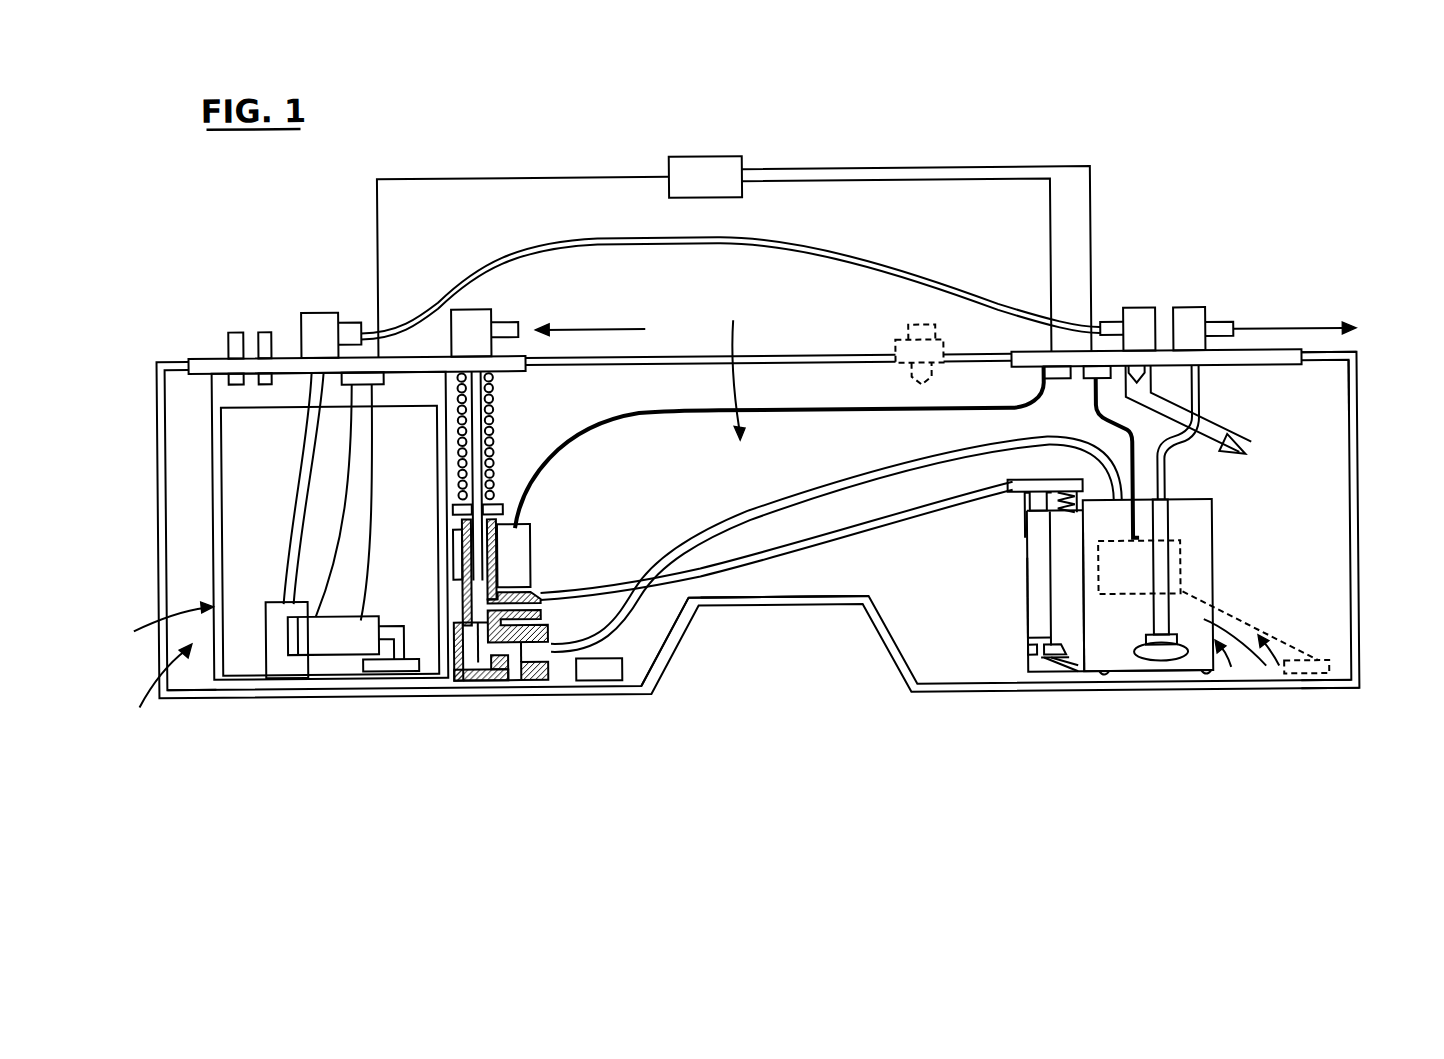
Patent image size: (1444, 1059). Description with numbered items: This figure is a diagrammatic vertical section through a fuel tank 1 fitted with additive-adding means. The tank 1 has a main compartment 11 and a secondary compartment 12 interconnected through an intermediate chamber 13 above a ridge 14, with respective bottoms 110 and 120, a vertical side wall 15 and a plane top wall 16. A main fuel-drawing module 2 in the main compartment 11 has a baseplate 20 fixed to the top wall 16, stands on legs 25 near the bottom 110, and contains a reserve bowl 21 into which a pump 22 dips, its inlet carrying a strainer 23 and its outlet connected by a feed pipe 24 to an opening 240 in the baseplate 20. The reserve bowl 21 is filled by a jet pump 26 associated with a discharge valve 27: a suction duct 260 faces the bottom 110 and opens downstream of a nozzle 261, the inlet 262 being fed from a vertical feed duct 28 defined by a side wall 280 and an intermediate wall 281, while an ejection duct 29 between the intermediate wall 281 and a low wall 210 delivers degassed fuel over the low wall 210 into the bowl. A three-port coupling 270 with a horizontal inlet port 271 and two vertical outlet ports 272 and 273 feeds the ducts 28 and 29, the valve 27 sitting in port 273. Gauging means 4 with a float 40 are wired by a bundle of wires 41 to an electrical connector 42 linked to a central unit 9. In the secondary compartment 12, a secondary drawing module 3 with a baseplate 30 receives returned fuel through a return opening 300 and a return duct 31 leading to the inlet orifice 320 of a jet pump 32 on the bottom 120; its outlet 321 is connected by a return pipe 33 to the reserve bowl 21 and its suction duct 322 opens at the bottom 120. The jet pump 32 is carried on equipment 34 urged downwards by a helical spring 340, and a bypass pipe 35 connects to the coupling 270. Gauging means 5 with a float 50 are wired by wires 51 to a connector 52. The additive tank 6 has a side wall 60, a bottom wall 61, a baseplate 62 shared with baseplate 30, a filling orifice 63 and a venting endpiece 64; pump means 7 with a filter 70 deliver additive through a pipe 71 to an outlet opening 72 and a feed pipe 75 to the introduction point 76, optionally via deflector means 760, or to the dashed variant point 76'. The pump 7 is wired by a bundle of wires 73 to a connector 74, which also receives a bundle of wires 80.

The fuel tank 1 is at (1252, 697).
The main fuel-drawing module 2 is at (1235, 695).
The secondary fuel-drawing module 3 is at (547, 684).
The gauging means 4 is at (1185, 563).
The gauging means 5 is at (525, 546).
The additive tank 6 is at (163, 622).
The pump means 7 is at (323, 643).
The control means 9 is at (705, 156).
The main compartment 11 is at (1273, 668).
The secondary compartment 12 is at (153, 692).
The intermediate chamber 13 is at (779, 407).
The ridge 14 is at (707, 600).
The side wall 15 is at (1353, 640).
The top wall 16 is at (1320, 357).
The baseplate 20 is at (1258, 354).
The reserve bowl 21 is at (1282, 675).
The pump 22 is at (1212, 512).
The filter or strainer 23 is at (1163, 688).
The feed pipe 24 is at (1167, 468).
The module bottom 25 is at (1200, 690).
The jet pump 26 is at (1035, 655).
The discharge valve 27 is at (1078, 482).
The feed duct 28 is at (1043, 612).
The ejection duct 29 is at (1067, 610).
The baseplate 30 is at (428, 369).
The return duct 31 is at (522, 334).
The jet pump 32 is at (492, 683).
The return pipe 33 is at (718, 533).
The equipment 34 is at (515, 525).
The bypass pipe 35 is at (663, 660).
The float 40 is at (1355, 678).
The bundle of wires 41 is at (1358, 355).
The electrical connector 42 is at (1112, 325).
The float 50 is at (603, 670).
The bundle of wires 51 is at (785, 410).
The electrical connector 52 is at (1058, 369).
The side wall 60 is at (217, 565).
The bottom wall 61 is at (240, 685).
The baseplate 62 is at (200, 356).
The filling orifice 63 is at (225, 328).
The endpiece 64 is at (265, 328).
The filter 70 is at (387, 668).
The pipe 71 is at (290, 527).
The outlet opening 72 is at (322, 309).
The bundle of wires 73 is at (375, 433).
The electrical connector 74 is at (375, 369).
The feed pipe 75 is at (763, 245).
The introduction point 76 is at (1141, 261).
The introduction point 76' is at (882, 340).
The bundle of wires 80 is at (352, 477).
The bottom 110 is at (1337, 693).
The bottom 120 is at (190, 697).
The low wall 210 is at (1083, 550).
The opening 240 is at (1191, 311).
The suction duct 260 is at (1055, 668).
The nozzle 261 is at (1048, 664).
The inlet 262 is at (1030, 650).
The three-port coupling 270 is at (1066, 495).
The inlet port 271 is at (1030, 484).
The outlet port 272 is at (1012, 497).
The outlet port 273 is at (1053, 515).
The side wall 280 is at (1065, 572).
The intermediate wall 281 is at (1050, 600).
The return opening 300 is at (478, 320).
The inlet orifice 320 is at (463, 687).
The outlet 321 is at (543, 652).
The suction duct 322 is at (512, 675).
The helical spring 340 is at (445, 395).
The deflector means 760 is at (1200, 432).